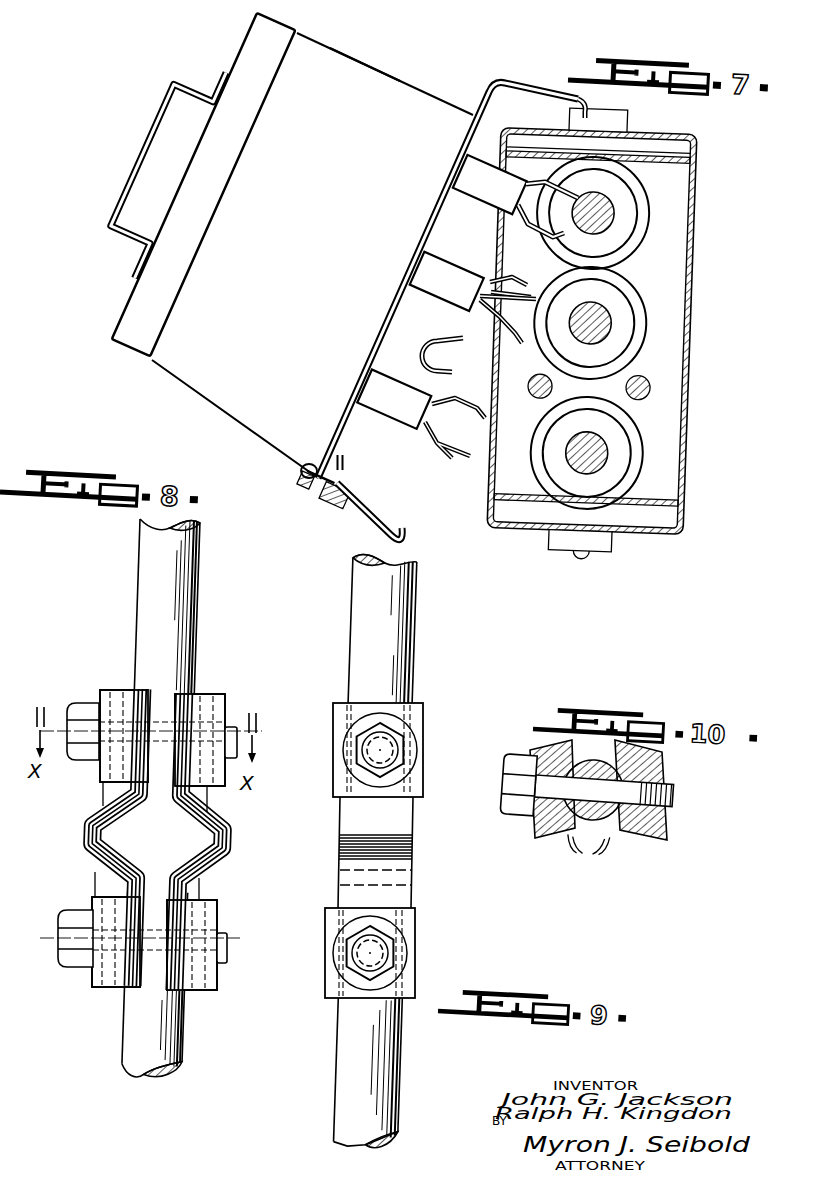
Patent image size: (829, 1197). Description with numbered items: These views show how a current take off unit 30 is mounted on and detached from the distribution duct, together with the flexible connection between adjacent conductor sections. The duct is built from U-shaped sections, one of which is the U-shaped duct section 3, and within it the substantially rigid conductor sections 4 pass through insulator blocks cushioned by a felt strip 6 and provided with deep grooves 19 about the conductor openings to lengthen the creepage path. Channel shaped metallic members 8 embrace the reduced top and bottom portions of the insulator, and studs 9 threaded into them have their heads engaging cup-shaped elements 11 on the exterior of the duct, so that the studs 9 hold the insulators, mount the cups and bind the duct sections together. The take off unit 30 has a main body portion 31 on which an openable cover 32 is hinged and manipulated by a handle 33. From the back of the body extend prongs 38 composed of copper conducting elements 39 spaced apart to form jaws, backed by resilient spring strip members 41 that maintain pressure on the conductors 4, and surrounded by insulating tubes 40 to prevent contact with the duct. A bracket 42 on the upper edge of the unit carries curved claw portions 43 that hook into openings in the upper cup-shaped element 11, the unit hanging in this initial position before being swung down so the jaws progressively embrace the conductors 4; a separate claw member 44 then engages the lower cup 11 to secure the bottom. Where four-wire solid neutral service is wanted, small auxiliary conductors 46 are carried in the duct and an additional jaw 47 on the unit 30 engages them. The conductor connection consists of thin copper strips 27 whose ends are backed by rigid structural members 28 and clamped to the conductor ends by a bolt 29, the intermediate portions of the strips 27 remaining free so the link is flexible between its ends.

In FIG. 7, the U-shaped duct section 3 is at (677, 135).
In FIG. 7, the conductor section 4 is at (607, 213).
In FIG. 8, the conductor section 4 is at (150, 570).
In FIG. 9, the conductor section 4 is at (365, 622).
In FIG. 7, the felt strip 6 is at (697, 227).
In FIG. 7, the channel shaped metallic member 8 is at (672, 150).
In FIG. 7, the stud 9 is at (588, 560).
In FIG. 7, the cup-shaped element 11 is at (608, 122).
In FIG. 7, the groove 19 is at (620, 288).
In FIG. 8, the thin strip 27 is at (90, 842).
In FIG. 9, the thin strip 27 is at (393, 833).
In FIG. 10, the thin strip 27 is at (598, 832).
In FIG. 8, the rigid structural member 28 is at (113, 695).
In FIG. 9, the rigid structural member 28 is at (347, 713).
In FIG. 10, the rigid structural member 28 is at (557, 752).
In FIG. 8, the bolt 29 is at (82, 713).
In FIG. 9, the bolt 29 is at (385, 752).
In FIG. 10, the bolt 29 is at (592, 787).
In FIG. 7, the current take off unit 30 is at (362, 63).
In FIG. 7, the main body portion 31 is at (383, 80).
In FIG. 7, the openable cover 32 is at (135, 313).
In FIG. 7, the handle 33 is at (137, 168).
In FIG. 7, the prong 38 is at (490, 277).
In FIG. 7, the conducting element 39 is at (508, 319).
In FIG. 7, the insulating tube 40 is at (442, 292).
In FIG. 7, the spring strip member 41 is at (550, 180).
In FIG. 7, the bracket 42 is at (533, 93).
In FIG. 7, the claw portion 43 is at (583, 106).
In FIG. 7, the claw member 44 is at (377, 520).
In FIG. 7, the auxiliary conductor 46 is at (627, 388).
In FIG. 7, the additional jaw 47 is at (423, 340).